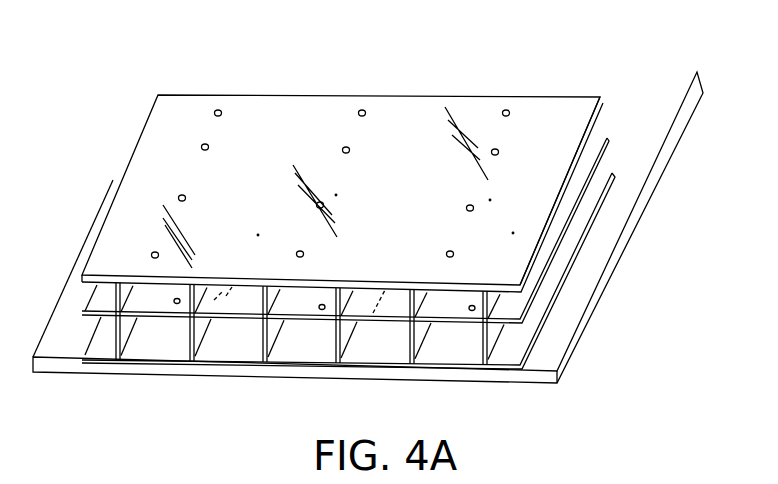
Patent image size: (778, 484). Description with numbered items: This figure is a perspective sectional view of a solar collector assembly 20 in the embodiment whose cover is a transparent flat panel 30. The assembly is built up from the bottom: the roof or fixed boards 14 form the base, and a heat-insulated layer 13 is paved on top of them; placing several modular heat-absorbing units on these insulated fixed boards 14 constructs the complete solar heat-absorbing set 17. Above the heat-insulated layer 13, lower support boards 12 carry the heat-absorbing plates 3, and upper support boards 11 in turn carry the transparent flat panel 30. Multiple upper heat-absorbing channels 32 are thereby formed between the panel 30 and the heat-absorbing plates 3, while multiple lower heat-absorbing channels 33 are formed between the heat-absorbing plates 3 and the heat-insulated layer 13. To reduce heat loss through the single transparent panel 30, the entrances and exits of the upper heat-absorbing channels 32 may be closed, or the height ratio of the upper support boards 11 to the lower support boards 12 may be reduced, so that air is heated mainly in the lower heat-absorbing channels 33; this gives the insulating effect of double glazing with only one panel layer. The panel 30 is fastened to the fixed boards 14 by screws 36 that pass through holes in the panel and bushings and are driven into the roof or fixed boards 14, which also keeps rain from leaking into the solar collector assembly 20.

The solar collector assembly 20 is at (362, 94).
The screws 36 is at (219, 111).
The transparent flat panel 30 is at (603, 98).
The heat-absorbing plates 3 is at (605, 138).
The heat-insulated layer 13 is at (612, 173).
The fixed boards 14 is at (578, 338).
The upper support boards 11 is at (487, 308).
The lower support boards 12 is at (487, 357).
The upper heat-absorbing channels 32 is at (217, 293).
The lower heat-absorbing channels 33 is at (247, 323).
The solar heat-absorbing set 17 is at (405, 322).